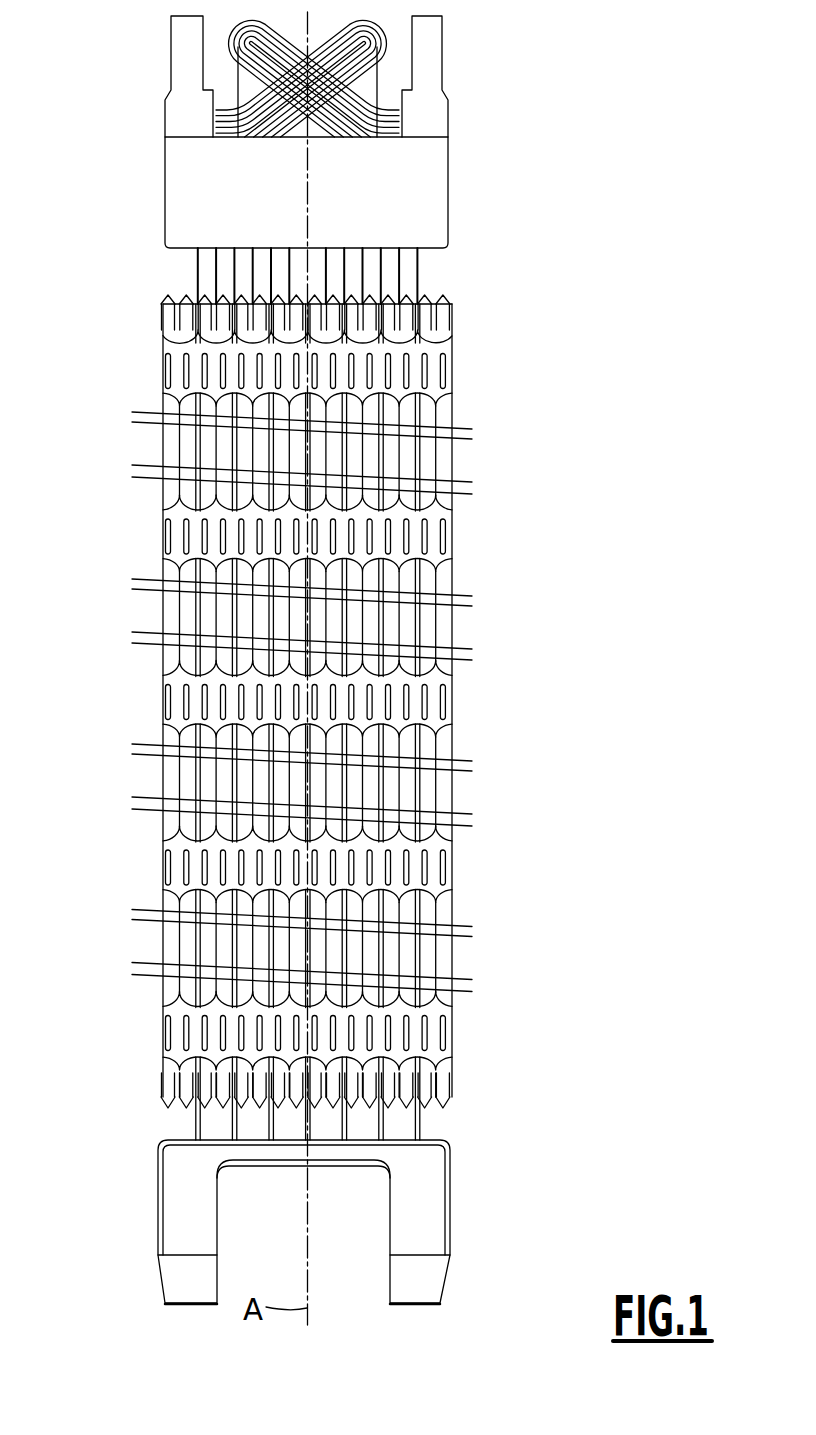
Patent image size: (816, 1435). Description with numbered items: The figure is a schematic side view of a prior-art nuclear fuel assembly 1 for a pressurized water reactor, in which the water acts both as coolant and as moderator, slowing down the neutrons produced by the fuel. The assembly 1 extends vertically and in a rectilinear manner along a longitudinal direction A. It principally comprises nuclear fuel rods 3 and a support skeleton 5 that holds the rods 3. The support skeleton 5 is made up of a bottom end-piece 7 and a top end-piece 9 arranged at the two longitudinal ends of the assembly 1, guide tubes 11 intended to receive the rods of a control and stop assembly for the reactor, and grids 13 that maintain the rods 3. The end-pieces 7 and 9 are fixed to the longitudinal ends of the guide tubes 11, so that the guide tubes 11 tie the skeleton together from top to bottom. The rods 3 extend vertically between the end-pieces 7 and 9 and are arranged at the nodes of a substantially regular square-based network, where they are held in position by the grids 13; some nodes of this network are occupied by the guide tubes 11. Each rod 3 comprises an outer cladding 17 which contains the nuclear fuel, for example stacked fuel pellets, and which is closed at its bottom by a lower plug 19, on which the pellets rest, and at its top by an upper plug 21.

The nuclear fuel assembly 1 is at (548, 577).
The nuclear fuel rods 3 is at (428, 327).
The support skeleton 5 is at (466, 232).
The bottom end-piece 7 is at (434, 1219).
The top end-piece 9 is at (432, 178).
The guide tubes 11 is at (240, 276).
The grids 13 is at (151, 374).
The outer cladding 17 is at (187, 452).
The lower plug 19 is at (165, 1103).
The upper plug 21 is at (178, 300).